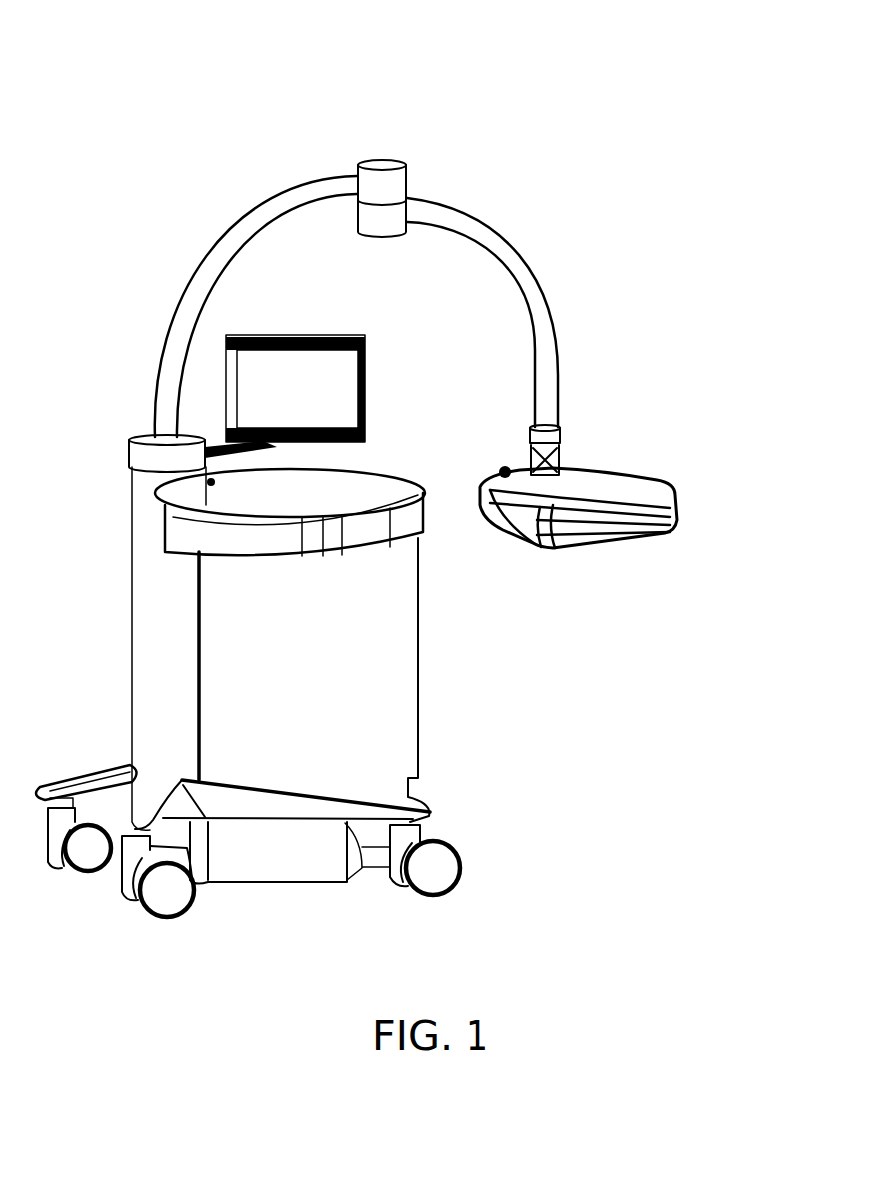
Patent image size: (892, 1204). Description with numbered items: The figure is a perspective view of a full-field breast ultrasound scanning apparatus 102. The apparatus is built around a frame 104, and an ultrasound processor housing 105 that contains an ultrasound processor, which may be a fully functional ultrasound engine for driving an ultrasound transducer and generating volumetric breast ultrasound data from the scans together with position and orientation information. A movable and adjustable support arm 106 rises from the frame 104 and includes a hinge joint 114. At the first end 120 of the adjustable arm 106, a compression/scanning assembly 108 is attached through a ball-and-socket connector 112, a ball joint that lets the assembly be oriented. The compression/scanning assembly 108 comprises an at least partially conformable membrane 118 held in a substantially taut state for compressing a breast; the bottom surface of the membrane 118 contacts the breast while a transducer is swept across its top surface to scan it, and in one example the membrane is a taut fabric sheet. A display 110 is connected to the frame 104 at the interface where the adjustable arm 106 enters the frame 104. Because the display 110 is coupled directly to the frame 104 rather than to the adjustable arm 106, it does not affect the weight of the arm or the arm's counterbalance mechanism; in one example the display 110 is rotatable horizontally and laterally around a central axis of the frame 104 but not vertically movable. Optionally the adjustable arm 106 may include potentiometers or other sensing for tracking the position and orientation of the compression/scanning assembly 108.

The scanning apparatus 102 is at (651, 50).
The frame 104 is at (143, 646).
The ultrasound processor housing 105 is at (392, 478).
The support arm 106 is at (293, 185).
The compression/scanning assembly 108 is at (667, 488).
The display 110 is at (348, 357).
The ball-and-socket connector 112 is at (530, 443).
The hinge joint 114 is at (401, 152).
The membrane 118 is at (597, 555).
The first end 120 is at (590, 391).